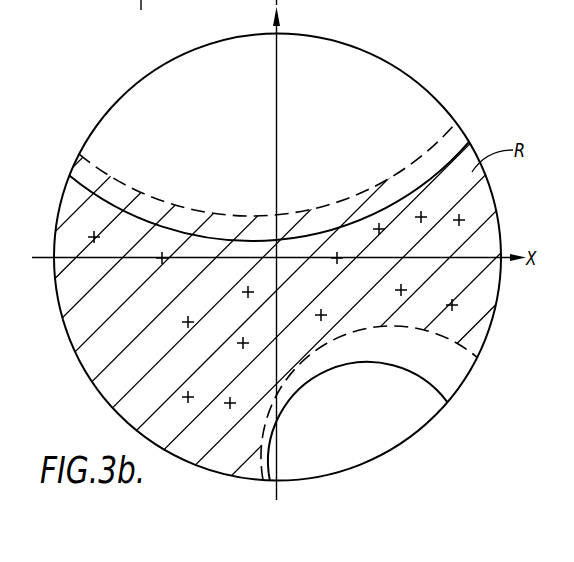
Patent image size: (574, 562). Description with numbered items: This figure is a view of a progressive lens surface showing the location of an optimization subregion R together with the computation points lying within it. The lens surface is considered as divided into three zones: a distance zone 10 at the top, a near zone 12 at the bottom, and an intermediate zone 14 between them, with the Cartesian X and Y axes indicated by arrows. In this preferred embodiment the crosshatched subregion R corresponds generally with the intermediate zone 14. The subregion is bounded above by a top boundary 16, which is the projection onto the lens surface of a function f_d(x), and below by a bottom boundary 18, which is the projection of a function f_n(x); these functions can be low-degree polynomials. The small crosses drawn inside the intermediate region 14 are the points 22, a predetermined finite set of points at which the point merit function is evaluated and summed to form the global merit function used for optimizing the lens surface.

The distance zone 10 is at (211, 140).
The near zone 12 is at (362, 433).
The intermediate zone 14 is at (492, 251).
The top boundary 16 is at (371, 188).
The bottom boundary 18 is at (405, 329).
The points 22 is at (161, 263).